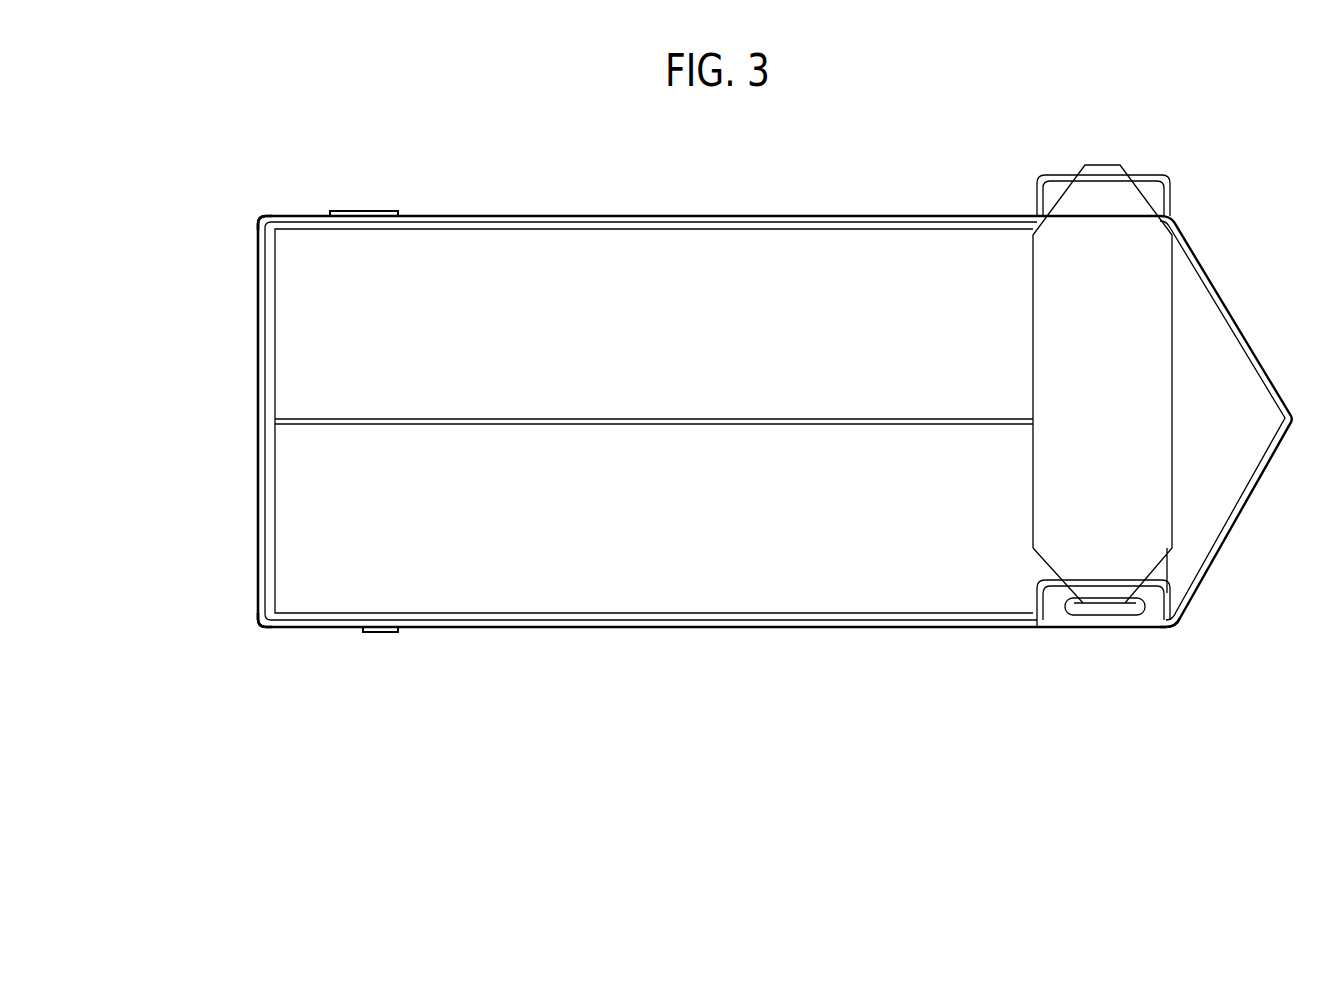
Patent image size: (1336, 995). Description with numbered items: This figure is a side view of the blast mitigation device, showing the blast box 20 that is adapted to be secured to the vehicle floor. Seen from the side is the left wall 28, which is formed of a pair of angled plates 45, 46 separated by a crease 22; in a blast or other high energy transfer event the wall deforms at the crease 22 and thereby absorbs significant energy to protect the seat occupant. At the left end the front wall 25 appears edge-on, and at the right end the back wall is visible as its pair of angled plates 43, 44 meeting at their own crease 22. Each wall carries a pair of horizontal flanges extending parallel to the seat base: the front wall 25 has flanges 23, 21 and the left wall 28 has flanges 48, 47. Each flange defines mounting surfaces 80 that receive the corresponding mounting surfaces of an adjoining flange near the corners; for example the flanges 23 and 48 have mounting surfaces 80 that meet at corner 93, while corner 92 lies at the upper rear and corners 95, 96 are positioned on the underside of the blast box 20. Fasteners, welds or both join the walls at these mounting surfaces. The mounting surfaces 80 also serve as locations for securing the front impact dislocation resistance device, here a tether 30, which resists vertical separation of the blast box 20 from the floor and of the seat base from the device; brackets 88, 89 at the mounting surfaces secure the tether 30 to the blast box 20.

The blast box 20 is at (294, 150).
The horizontal flange 21 is at (323, 632).
The crease 22 is at (727, 418).
The horizontal flange 23 is at (332, 213).
The front wall 25 is at (257, 318).
The left wall 28 is at (683, 262).
The tether 30 is at (1148, 282).
The angled plate 43 is at (1248, 316).
The angled plate 44 is at (1232, 535).
The angled plate 45 is at (650, 337).
The angled plate 46 is at (637, 527).
The horizontal flange 47 is at (645, 625).
The horizontal flange 48 is at (816, 220).
The mounting surface 80 is at (370, 213).
The bracket 88 is at (1050, 605).
The bracket 89 is at (1056, 180).
The corner 92 is at (1176, 206).
The corner 93 is at (254, 217).
The corner 95 is at (255, 629).
The corner 96 is at (1176, 632).